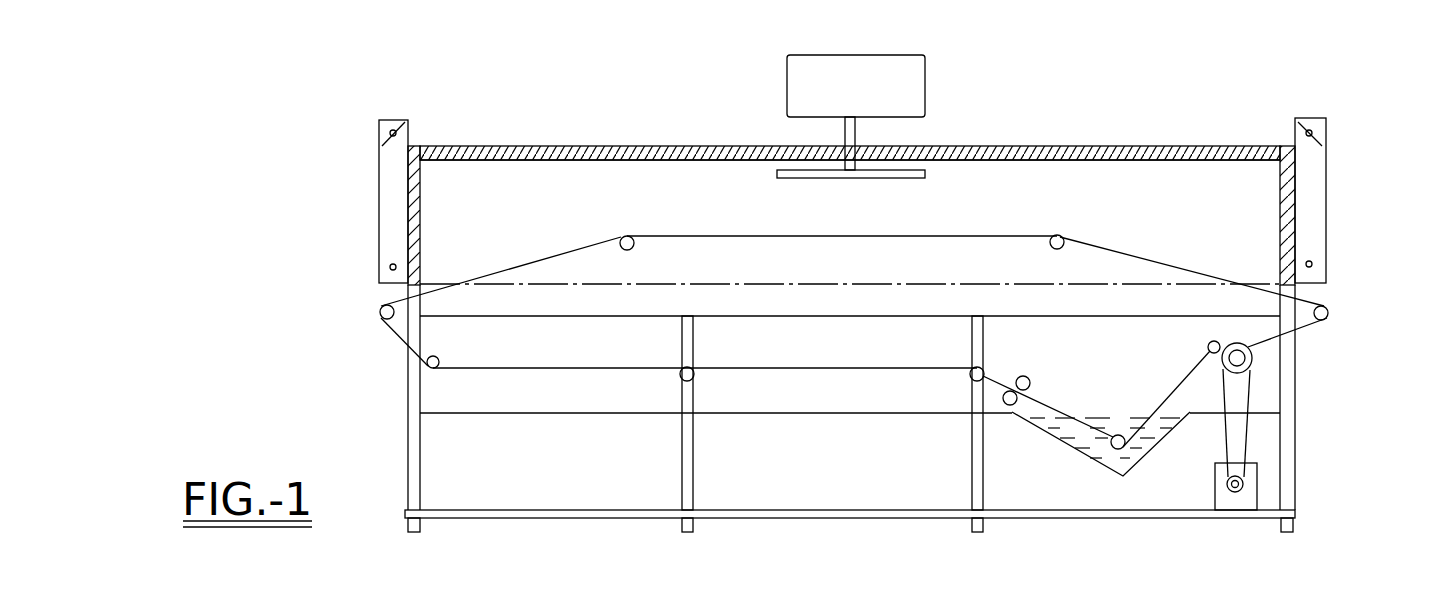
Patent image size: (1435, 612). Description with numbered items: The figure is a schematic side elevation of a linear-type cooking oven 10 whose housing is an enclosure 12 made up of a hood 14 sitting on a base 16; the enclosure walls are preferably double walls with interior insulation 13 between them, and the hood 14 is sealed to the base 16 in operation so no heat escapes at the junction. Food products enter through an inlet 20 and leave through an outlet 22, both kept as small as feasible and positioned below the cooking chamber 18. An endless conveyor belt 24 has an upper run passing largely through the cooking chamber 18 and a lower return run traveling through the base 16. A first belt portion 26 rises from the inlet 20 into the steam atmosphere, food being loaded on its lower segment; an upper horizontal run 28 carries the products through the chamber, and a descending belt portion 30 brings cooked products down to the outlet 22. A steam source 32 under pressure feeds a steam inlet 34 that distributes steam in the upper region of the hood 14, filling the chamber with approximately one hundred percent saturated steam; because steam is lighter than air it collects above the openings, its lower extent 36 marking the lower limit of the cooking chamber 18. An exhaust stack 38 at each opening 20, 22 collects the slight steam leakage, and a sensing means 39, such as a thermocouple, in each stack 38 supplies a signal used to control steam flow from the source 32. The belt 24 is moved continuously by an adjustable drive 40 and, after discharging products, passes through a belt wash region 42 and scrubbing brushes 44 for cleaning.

The cooking oven 10 is at (597, 136).
The enclosure 12 is at (1173, 138).
The interior insulation 13 is at (1066, 146).
The hood 14 is at (690, 146).
The base 16 is at (420, 413).
The cooking chamber 18 is at (1147, 212).
The inlet 20 is at (376, 292).
The outlet 22 is at (1310, 293).
The conveyor belt 24 is at (538, 253).
The first belt portion 26 is at (590, 243).
The right upper roller 28 is at (724, 235).
The belt portion 30 is at (1183, 265).
The steam source 32 is at (926, 82).
The steam inlet 34 is at (856, 152).
The lower extent of the steam 36 is at (803, 288).
The exhaust stack 38 is at (379, 183).
The steam sensing means 39 is at (390, 267).
The adjustable drive 40 is at (1235, 497).
The belt wash region 42 is at (1122, 466).
The scrubbing brushes 44 is at (1028, 412).